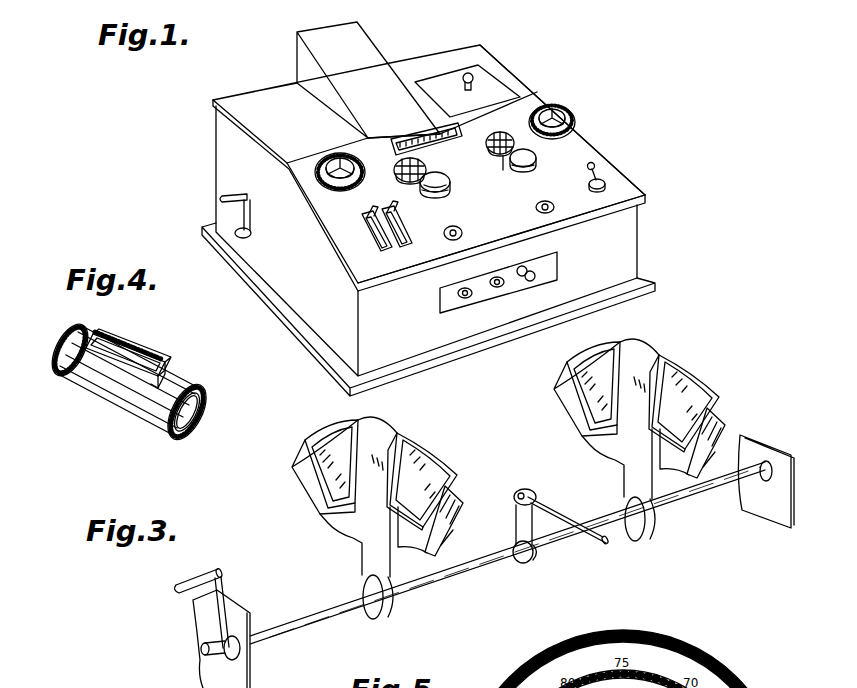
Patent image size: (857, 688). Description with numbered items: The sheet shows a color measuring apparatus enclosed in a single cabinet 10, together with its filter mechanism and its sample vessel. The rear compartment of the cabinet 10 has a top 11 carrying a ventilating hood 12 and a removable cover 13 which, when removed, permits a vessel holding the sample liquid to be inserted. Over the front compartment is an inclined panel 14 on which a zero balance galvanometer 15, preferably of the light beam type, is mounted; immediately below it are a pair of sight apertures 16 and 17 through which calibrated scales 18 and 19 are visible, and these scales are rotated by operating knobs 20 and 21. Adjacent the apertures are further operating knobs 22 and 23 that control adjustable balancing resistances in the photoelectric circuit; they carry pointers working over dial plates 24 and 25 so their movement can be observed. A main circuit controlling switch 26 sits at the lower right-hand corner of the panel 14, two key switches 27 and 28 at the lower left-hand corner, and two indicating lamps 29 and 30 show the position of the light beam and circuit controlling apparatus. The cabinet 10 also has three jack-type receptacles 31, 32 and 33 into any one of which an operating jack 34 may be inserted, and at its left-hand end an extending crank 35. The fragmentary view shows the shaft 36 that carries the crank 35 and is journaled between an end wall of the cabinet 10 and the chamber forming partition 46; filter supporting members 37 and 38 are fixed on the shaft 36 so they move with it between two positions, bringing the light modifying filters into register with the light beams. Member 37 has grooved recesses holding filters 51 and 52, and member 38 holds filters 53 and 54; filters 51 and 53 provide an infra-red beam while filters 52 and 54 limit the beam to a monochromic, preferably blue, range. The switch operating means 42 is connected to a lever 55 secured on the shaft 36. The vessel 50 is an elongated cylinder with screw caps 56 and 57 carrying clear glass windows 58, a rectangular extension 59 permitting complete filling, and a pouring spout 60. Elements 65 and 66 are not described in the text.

In FIG. 1, the cabinet 10 is at (228, 170).
In FIG. 3, the cabinet 10 is at (237, 673).
In FIG. 1, the top 11 is at (268, 100).
In FIG. 1, the ventilating hood 12 is at (357, 45).
In FIG. 1, the removable cover 13 is at (495, 87).
In FIG. 1, the inclined panel 14 is at (590, 148).
In FIG. 1, the zero balance galvanometer 15 is at (412, 140).
In FIG. 1, the sight aperture 16 is at (396, 169).
In FIG. 1, the sight aperture 17 is at (505, 136).
In FIG. 1, the calibrated scale 18 is at (426, 186).
In FIG. 1, the calibrated scale 19 is at (503, 158).
In FIG. 1, the operating knob 20 is at (447, 186).
In FIG. 1, the operating knob 21 is at (533, 160).
In FIG. 1, the operating knob 22 is at (345, 158).
In FIG. 1, the operating knob 23 is at (553, 118).
In FIG. 1, the dial plate 24 is at (355, 188).
In FIG. 1, the dial plate 25 is at (587, 145).
In FIG. 1, the main circuit controlling switch 26 is at (603, 174).
In FIG. 1, the key switch 27 is at (398, 214).
In FIG. 1, the key switch 28 is at (374, 221).
In FIG. 1, the indicating lamp 29 is at (461, 231).
In FIG. 1, the indicating lamp 30 is at (554, 207).
In FIG. 1, the jack-type receptacle 31 is at (521, 266).
In FIG. 1, the jack-type receptacle 32 is at (498, 277).
In FIG. 1, the jack-type receptacle 33 is at (467, 288).
In FIG. 1, the operating jack 34 is at (532, 280).
In FIG. 1, the crank 35 is at (220, 198).
In FIG. 3, the crank 35 is at (185, 580).
In FIG. 3, the shaft 36 is at (303, 615).
In FIG. 3, the filter supporting member 37 is at (450, 500).
In FIG. 3, the filter supporting member 38 is at (697, 445).
In FIG. 3, the switch operating means 42 is at (597, 543).
In FIG. 3, the chamber forming partition 46 is at (764, 503).
In FIG. 4, the vessel 50 is at (128, 388).
In FIG. 3, the filter 51 is at (438, 462).
In FIG. 3, the filter 52 is at (325, 435).
In FIG. 3, the filter 53 is at (690, 380).
In FIG. 3, the filter 54 is at (598, 360).
In FIG. 3, the lever 55 is at (515, 520).
In FIG. 4, the screw cap 56 is at (72, 330).
In FIG. 4, the screw cap 57 is at (185, 385).
In FIG. 4, the clear glass window 58 is at (190, 420).
In FIG. 4, the rectangular extension 59 is at (132, 350).
In FIG. 4, the pouring spout 60 is at (166, 372).
In FIG. 1, the knob skirt 65 is at (418, 152).
In FIG. 1, the knob 66 is at (503, 134).